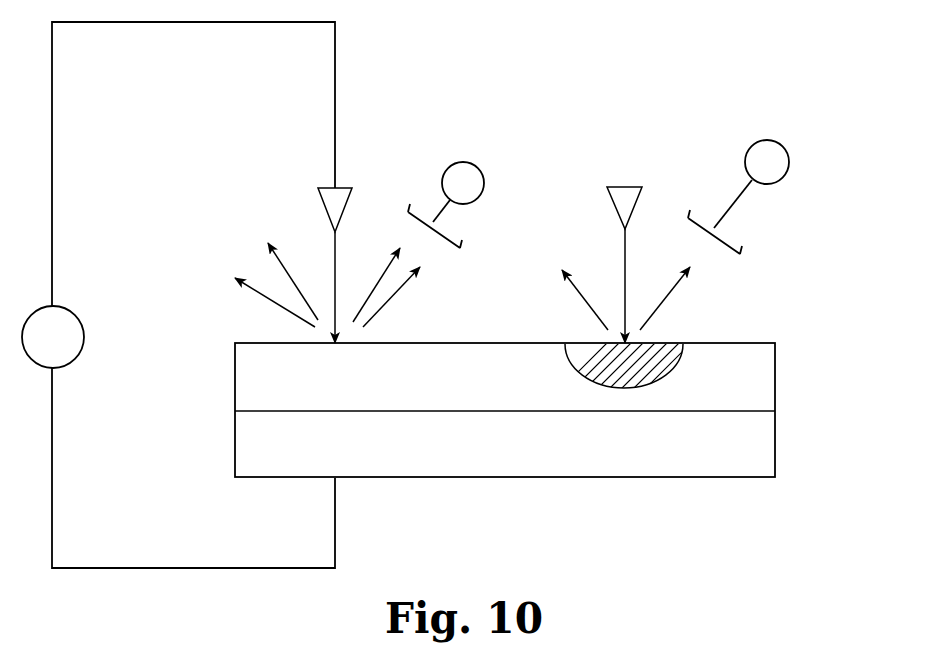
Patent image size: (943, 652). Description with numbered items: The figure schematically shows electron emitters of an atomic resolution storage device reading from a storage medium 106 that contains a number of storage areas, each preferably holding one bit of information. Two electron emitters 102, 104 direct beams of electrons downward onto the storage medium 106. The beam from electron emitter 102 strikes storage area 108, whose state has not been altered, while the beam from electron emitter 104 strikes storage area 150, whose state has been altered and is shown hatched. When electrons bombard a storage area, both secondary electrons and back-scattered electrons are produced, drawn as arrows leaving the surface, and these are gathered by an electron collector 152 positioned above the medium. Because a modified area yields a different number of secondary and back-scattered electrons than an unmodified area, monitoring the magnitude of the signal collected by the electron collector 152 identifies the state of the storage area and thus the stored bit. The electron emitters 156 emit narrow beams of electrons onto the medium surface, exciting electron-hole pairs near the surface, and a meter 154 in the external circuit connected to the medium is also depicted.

The electron emitter 102 is at (338, 192).
The electron emitter 104 is at (626, 196).
The storage medium 106 is at (791, 404).
The storage area 108 is at (370, 338).
The storage area 150 is at (664, 340).
The electron collector 152 is at (779, 152).
The current meter 154 is at (73, 316).
The electron emitters 156 is at (335, 255).